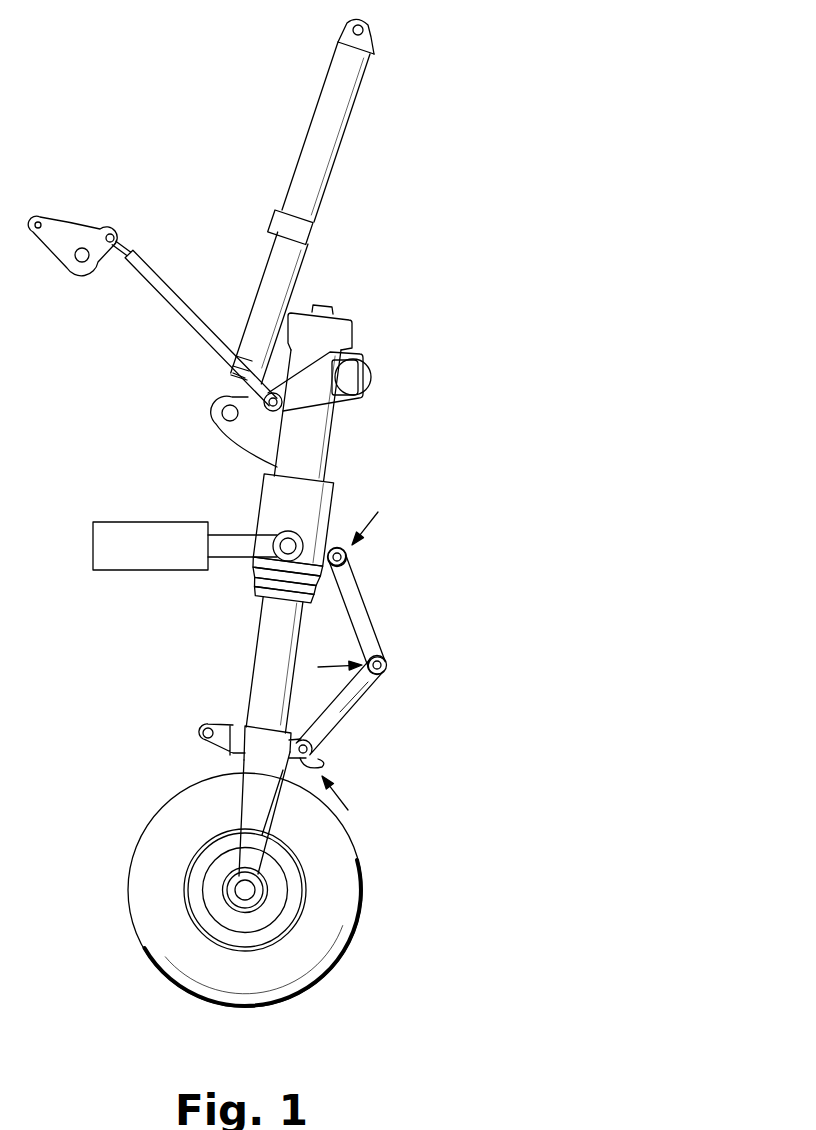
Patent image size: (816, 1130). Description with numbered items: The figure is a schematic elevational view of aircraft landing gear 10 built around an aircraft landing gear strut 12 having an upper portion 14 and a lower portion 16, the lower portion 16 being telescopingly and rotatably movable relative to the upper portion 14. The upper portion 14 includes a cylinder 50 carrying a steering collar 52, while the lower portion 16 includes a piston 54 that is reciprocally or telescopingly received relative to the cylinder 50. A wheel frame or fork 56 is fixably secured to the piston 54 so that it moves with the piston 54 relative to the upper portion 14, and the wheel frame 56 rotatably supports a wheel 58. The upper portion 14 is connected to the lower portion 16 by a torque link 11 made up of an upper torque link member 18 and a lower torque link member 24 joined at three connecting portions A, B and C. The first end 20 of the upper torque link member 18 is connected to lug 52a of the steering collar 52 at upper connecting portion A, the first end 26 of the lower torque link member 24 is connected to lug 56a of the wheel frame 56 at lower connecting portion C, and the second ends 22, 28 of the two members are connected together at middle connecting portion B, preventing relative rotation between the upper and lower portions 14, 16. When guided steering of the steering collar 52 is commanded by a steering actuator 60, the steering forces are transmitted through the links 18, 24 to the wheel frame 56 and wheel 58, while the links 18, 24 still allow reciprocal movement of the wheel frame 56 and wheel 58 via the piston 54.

The aircraft landing gear 10 is at (468, 504).
The torque link 11 is at (459, 683).
The aircraft landing gear strut 12 is at (232, 600).
The upper portion 14 is at (315, 446).
The lower portion 16 is at (256, 682).
The upper torque link member 18 is at (357, 601).
The first end 20 is at (342, 572).
The second end 22 is at (388, 669).
The lower torque link member 24 is at (345, 712).
The first end 26 is at (315, 759).
The second end 28 is at (367, 675).
The cylinder 50 is at (282, 440).
The steering collar 52 is at (263, 492).
The lug 52a is at (337, 548).
The piston 54 is at (285, 637).
The wheel frame 56 is at (253, 787).
The lug 56a is at (293, 762).
The wheel 58 is at (357, 849).
The steering actuator 60 is at (150, 571).